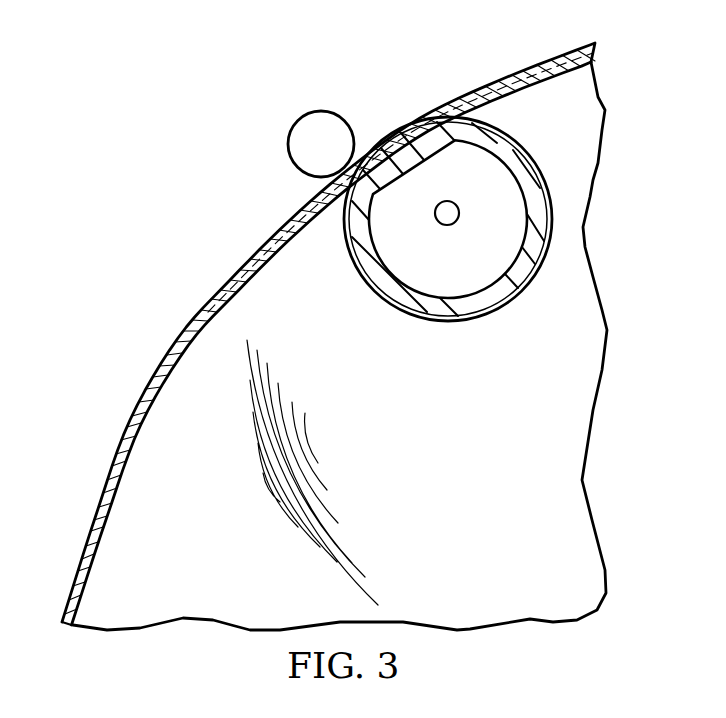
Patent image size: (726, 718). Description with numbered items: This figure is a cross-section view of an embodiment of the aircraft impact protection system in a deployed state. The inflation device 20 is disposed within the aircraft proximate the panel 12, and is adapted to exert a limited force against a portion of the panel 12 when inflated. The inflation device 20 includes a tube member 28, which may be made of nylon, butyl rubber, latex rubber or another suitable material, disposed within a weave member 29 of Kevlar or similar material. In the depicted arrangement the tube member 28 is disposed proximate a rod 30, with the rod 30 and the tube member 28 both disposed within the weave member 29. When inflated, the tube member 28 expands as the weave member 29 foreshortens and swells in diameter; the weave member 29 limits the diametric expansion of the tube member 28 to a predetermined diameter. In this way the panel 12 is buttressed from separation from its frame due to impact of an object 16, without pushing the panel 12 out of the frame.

The panel 12 is at (492, 80).
The object 16 is at (318, 111).
The inflation device 20 is at (372, 316).
The tube member 28 is at (442, 309).
The weave member 29 is at (482, 313).
The rod 30 is at (447, 226).